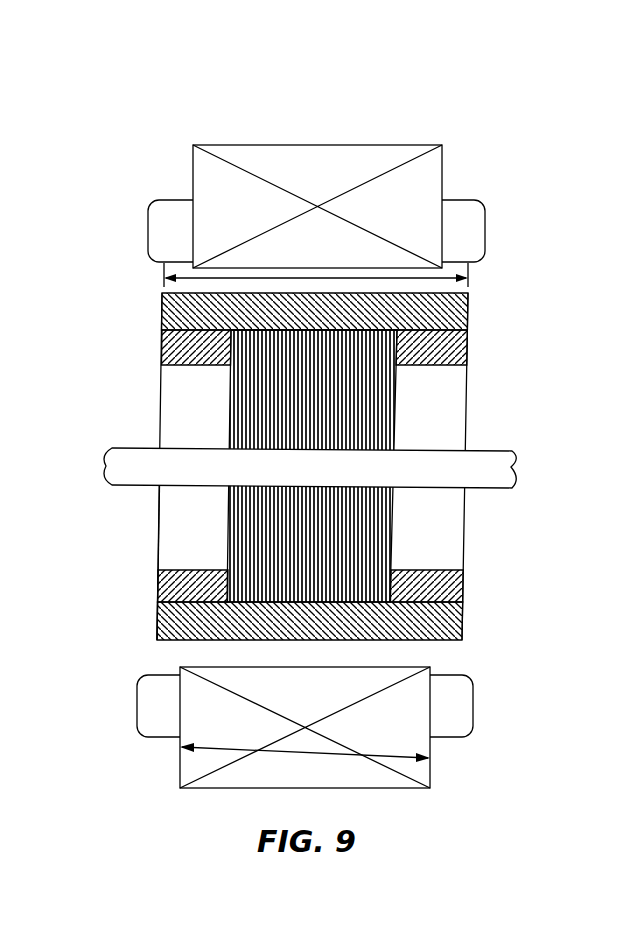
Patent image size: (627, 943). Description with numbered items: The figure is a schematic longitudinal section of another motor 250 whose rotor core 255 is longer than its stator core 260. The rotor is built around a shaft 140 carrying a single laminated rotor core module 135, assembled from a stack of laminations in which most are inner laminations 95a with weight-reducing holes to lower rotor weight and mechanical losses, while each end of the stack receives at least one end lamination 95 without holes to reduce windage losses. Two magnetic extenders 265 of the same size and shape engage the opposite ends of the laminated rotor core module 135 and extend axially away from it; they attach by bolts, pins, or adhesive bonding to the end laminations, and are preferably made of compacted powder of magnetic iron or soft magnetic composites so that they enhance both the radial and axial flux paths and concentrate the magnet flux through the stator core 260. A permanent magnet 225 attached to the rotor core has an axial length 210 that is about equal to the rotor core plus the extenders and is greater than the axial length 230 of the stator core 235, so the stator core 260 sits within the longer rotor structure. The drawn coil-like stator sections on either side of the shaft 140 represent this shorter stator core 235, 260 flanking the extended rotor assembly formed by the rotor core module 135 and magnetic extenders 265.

The motor 250 is at (247, 95).
The stator core 235 is at (388, 162).
The stator core 260 is at (182, 173).
The axial length 210 is at (207, 283).
The magnetic extender 265 is at (163, 357).
The rotor core module 135 is at (408, 400).
The inner lamination 95a is at (368, 428).
The shaft 140 is at (513, 463).
The end lamination 95 is at (390, 538).
The permanent magnet 225 is at (452, 623).
The rotor core 255 is at (118, 590).
The axial length 230 is at (333, 757).